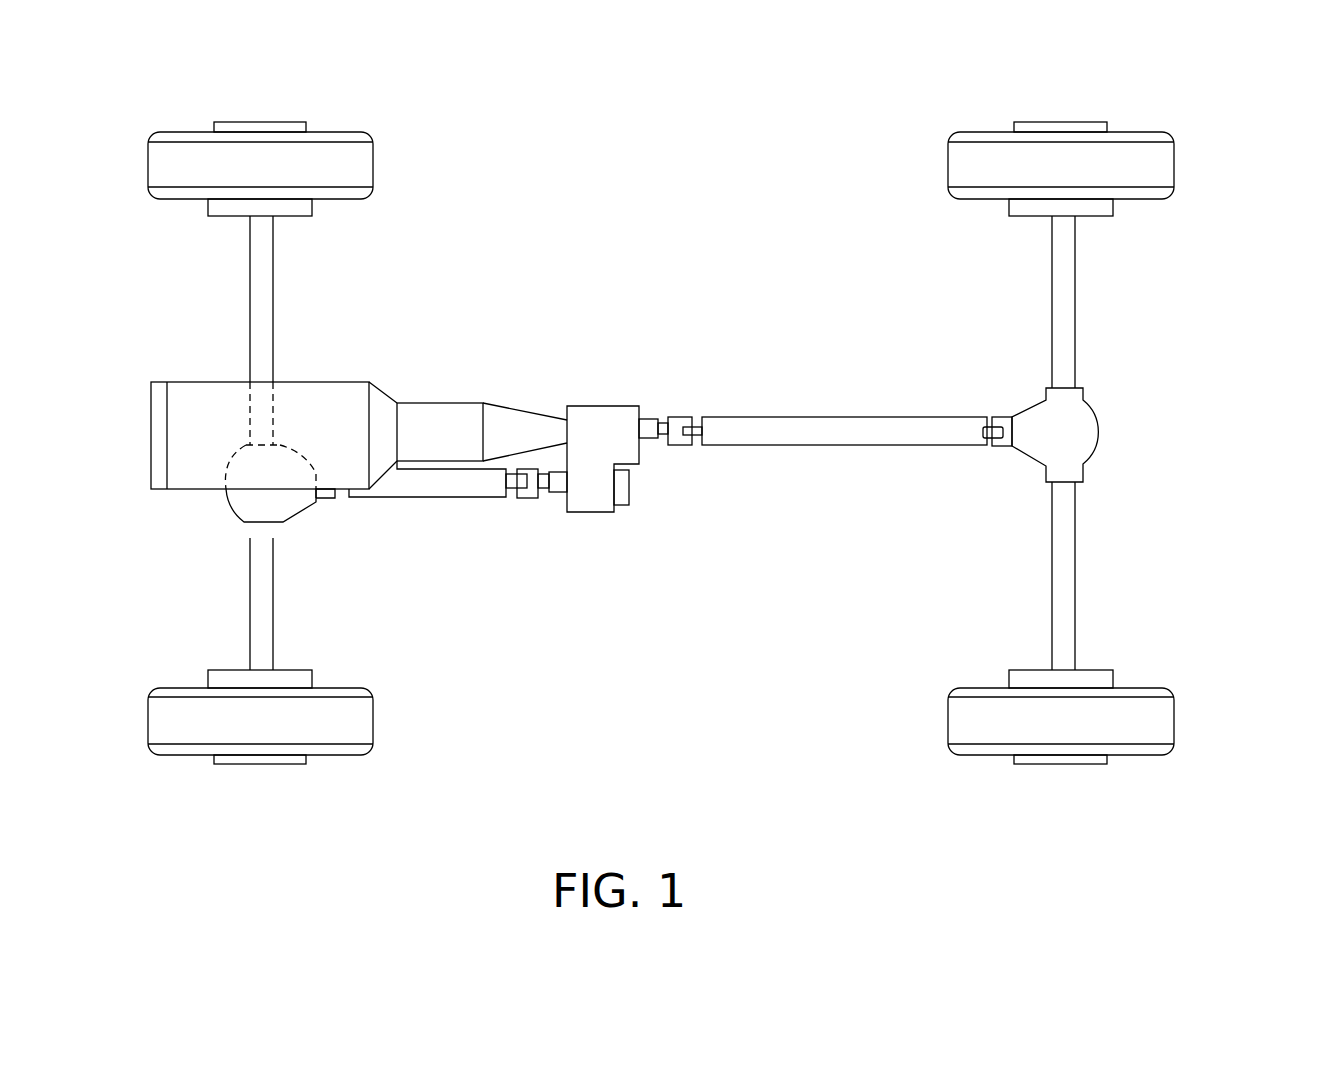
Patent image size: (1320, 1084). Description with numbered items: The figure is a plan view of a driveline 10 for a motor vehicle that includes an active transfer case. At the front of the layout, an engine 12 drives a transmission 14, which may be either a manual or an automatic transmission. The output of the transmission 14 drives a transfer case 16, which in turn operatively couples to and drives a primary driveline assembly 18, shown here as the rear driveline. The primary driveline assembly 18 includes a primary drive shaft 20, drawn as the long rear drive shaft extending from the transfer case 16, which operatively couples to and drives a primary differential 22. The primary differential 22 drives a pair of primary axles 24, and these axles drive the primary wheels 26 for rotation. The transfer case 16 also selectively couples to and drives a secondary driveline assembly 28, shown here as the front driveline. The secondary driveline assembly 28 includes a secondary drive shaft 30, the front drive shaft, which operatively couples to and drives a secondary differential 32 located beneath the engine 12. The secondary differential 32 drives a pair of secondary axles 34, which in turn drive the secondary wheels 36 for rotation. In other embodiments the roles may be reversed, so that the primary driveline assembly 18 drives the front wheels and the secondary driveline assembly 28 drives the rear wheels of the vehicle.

The driveline 10 is at (750, 156).
The engine 12 is at (190, 383).
The transmission 14 is at (462, 403).
The transfer case 16 is at (602, 407).
The primary driveline assembly 18 is at (890, 323).
The primary drive shaft 20 is at (837, 416).
The primary differential 22 is at (1100, 432).
The primary axles 24 is at (1075, 301).
The primary wheels 26 is at (1174, 165).
The secondary driveline assembly 28 is at (415, 572).
The secondary drive shaft 30 is at (463, 497).
The secondary differential 32 is at (300, 512).
The secondary axles 34 is at (273, 299).
The secondary wheels 36 is at (375, 163).